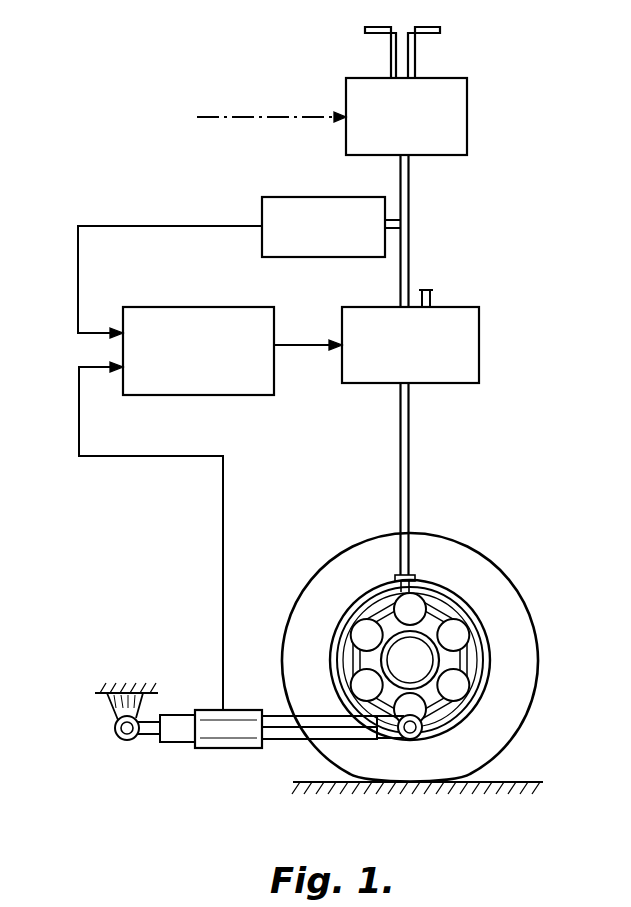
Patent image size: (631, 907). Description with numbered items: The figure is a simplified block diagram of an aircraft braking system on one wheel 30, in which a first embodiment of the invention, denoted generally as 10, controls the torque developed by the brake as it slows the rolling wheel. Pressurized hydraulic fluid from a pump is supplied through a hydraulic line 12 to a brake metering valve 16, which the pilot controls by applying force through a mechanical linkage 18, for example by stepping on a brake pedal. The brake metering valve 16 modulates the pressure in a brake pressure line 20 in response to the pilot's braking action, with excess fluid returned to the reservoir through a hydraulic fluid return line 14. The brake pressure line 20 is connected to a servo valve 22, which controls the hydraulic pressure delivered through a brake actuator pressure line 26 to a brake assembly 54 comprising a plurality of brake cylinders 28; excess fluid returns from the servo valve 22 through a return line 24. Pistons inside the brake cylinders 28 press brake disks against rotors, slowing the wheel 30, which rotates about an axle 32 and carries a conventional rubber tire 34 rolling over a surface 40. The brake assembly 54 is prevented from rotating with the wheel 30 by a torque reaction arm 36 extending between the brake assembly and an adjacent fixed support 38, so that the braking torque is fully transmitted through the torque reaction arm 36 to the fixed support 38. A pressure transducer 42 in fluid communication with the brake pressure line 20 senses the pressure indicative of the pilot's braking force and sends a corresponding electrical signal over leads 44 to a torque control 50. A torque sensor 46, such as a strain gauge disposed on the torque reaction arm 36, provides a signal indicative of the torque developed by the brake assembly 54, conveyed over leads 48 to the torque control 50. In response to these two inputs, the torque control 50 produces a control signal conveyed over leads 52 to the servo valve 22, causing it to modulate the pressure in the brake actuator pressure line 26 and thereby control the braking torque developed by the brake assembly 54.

The first embodiment 10 is at (190, 256).
The hydraulic line 12 is at (390, 50).
The hydraulic fluid return line 14 is at (416, 52).
The brake metering valve 16 is at (467, 113).
The mechanical linkage 18 is at (262, 119).
The brake pressure line 20 is at (410, 195).
The servo valve 22 is at (480, 339).
The return line 24 is at (431, 296).
The brake actuator pressure line 26 is at (411, 464).
The brake cylinders 28 is at (357, 632).
The wheel 30 is at (452, 598).
The axle 32 is at (418, 652).
The rubber tire 34 is at (525, 688).
The torque reaction arm 36 is at (291, 740).
The fixed support 38 is at (112, 708).
The surface 40 is at (517, 779).
The pressure transducer 42 is at (305, 258).
The leads 44 is at (78, 284).
The torque sensor 46 is at (213, 740).
The leads 48 is at (222, 541).
The torque control 50 is at (200, 396).
The leads 52 is at (292, 344).
The brake assembly 54 is at (373, 597).